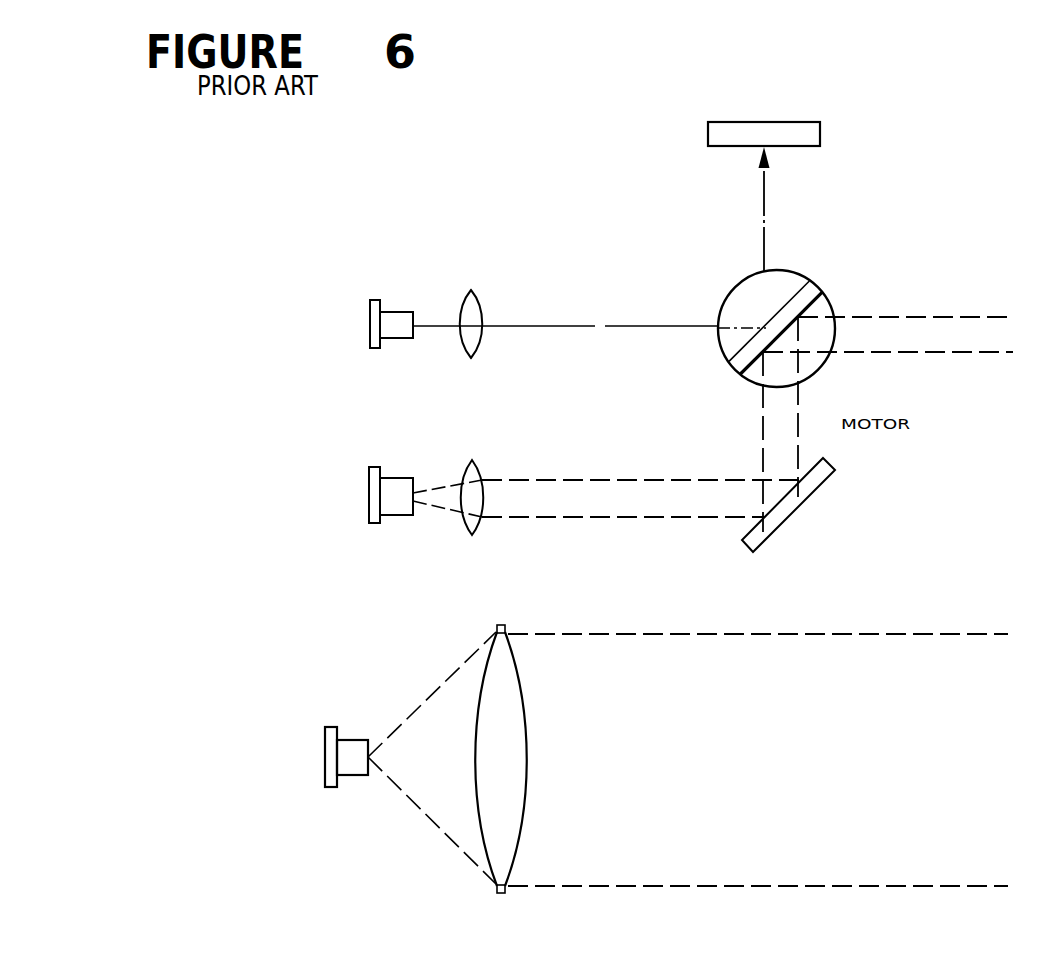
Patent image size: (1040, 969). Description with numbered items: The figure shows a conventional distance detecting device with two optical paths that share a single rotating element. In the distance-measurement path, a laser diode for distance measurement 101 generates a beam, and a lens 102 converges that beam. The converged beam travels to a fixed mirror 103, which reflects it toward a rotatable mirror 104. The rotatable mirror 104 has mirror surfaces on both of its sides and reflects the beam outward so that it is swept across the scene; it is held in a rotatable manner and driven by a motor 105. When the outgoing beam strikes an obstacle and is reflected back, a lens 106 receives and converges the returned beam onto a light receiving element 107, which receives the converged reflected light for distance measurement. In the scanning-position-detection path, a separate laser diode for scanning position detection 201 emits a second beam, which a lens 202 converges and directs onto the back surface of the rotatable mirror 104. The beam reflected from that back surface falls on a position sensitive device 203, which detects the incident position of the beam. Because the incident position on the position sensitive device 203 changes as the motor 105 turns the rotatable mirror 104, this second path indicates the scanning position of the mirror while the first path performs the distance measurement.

The laser diode for distance measurement 101 is at (402, 478).
The lens 102 is at (478, 468).
The fixed mirror 103 is at (800, 506).
The rotatable mirror 104 is at (815, 283).
The motor 105 is at (803, 375).
The lens 106 is at (498, 692).
The light receiving element 107 is at (348, 777).
The laser diode for scanning position detection 201 is at (402, 312).
The lens 202 is at (476, 295).
The position sensitive device 203 is at (821, 131).